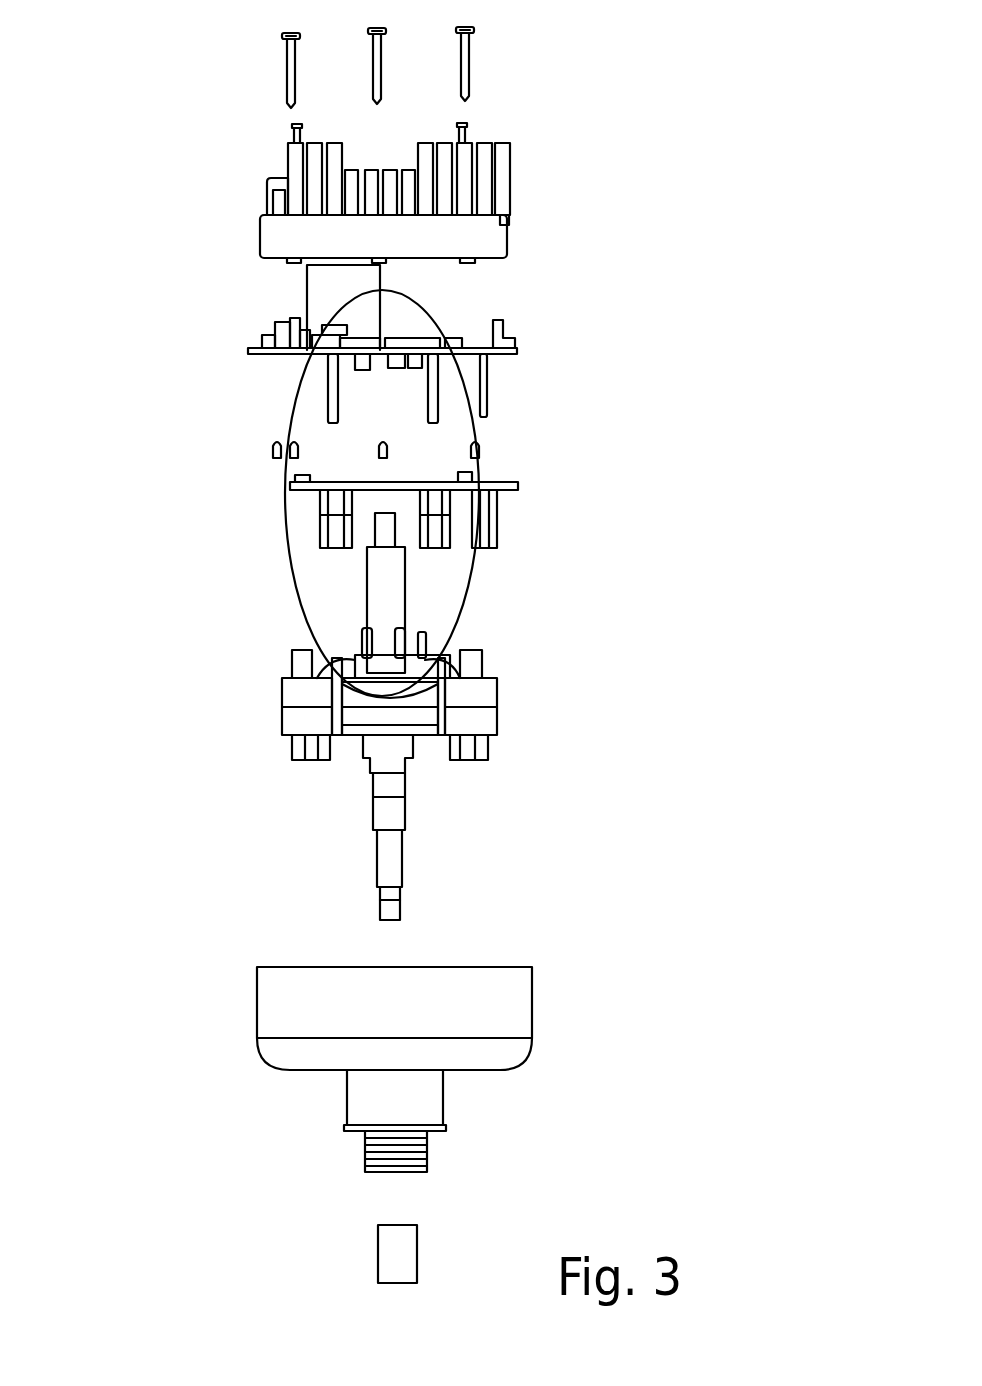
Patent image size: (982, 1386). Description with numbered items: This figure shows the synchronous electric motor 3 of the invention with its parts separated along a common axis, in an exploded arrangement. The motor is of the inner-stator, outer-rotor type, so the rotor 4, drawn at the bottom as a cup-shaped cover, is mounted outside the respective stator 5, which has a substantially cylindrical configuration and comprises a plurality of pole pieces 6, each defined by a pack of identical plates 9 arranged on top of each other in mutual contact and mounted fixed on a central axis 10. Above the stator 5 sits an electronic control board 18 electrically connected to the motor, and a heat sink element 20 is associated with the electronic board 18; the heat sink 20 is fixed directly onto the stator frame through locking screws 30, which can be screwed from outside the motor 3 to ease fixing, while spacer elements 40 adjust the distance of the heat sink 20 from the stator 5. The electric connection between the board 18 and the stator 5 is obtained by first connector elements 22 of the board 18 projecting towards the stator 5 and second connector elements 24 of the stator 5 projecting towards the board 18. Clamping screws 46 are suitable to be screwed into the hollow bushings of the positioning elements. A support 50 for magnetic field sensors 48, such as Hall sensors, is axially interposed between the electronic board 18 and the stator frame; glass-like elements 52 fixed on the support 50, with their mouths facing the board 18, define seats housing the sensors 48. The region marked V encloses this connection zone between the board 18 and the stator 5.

The synchronous electric motor 3 is at (722, 154).
The locking screws 30 is at (287, 90).
The heat sink element 20 is at (470, 198).
The spacer elements 40 is at (300, 265).
The first connector elements 22 is at (377, 348).
The electronic control board 18 is at (247, 353).
The magnetic field sensors 48 is at (330, 400).
The clamping screws 46 is at (478, 452).
The glass-like elements 52 is at (320, 507).
The support 50 is at (367, 555).
The connection region V is at (472, 572).
The second connector elements 24 is at (427, 638).
The stator 5 is at (517, 693).
The pole pieces 6 is at (470, 707).
The plates 9 is at (290, 745).
The central axis 10 is at (387, 815).
The rotor 4 is at (535, 997).